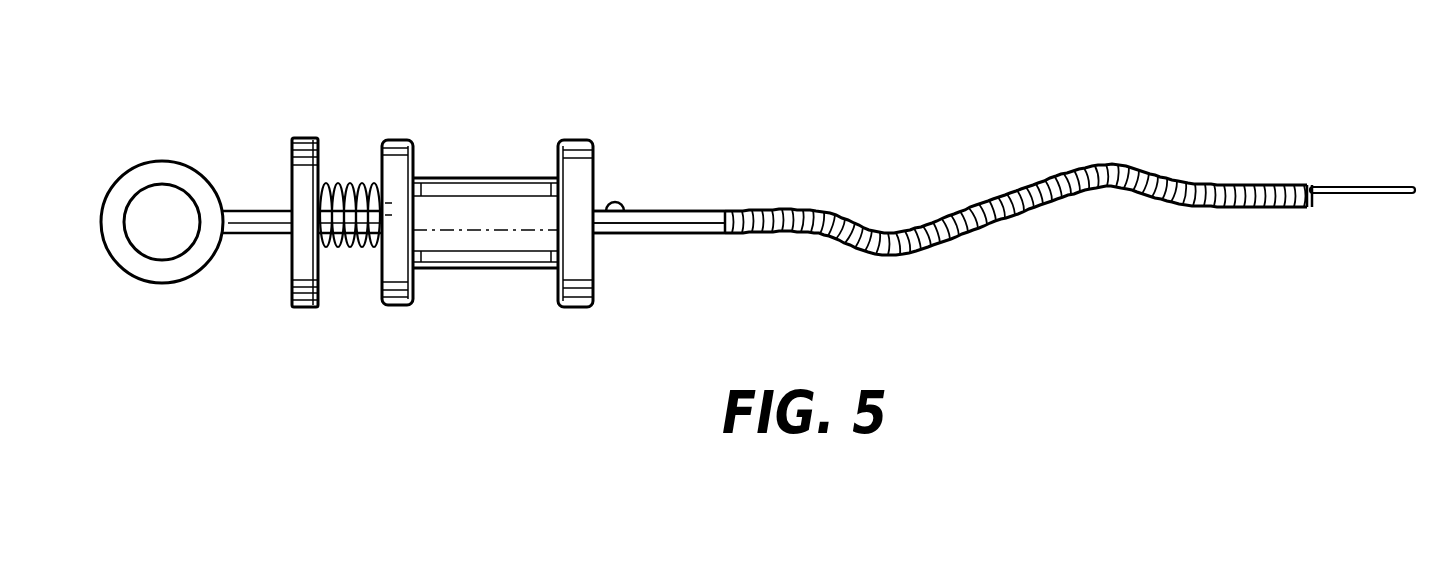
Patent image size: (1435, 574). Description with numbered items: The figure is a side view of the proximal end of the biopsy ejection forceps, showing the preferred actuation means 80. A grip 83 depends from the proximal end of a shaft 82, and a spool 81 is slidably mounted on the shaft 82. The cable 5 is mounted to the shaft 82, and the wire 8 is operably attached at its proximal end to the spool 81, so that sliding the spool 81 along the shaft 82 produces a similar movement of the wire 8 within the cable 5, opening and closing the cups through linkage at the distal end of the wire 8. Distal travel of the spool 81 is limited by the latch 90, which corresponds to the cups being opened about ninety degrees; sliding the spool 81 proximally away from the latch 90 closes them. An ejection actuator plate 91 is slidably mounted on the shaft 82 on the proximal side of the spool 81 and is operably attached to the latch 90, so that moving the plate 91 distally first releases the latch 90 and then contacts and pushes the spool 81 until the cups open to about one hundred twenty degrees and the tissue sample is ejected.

The actuation means 80 is at (284, 326).
The grip 83 is at (175, 172).
The ejection actuator plate 91 is at (302, 138).
The spool 81 is at (480, 202).
The latch 90 is at (618, 198).
The shaft 82 is at (660, 217).
The cable 5 is at (1208, 207).
The wire 8 is at (1383, 195).